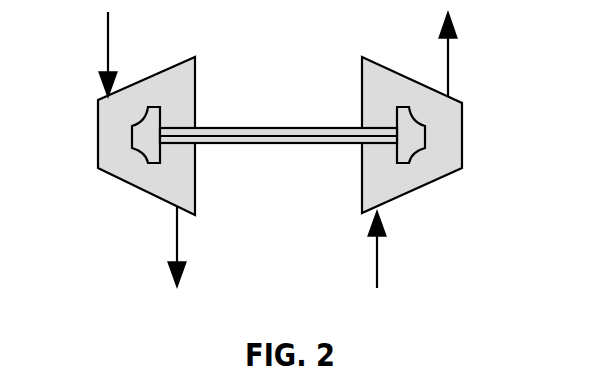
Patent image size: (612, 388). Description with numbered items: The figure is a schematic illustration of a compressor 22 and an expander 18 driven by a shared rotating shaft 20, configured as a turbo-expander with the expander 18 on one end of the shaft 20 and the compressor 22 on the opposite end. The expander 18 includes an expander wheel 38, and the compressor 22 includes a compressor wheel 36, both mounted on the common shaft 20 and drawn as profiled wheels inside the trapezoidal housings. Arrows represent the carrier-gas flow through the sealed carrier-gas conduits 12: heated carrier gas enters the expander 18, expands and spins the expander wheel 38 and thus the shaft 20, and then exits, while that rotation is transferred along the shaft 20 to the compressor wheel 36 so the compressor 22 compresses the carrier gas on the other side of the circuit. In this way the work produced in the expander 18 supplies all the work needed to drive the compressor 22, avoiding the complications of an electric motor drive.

The carrier-gas conduit 12 is at (107, 58).
The expander 18 is at (178, 172).
The rotating shaft 20 is at (246, 132).
The compressor 22 is at (373, 177).
The compressor wheel 36 is at (434, 160).
The expander wheel 38 is at (124, 161).